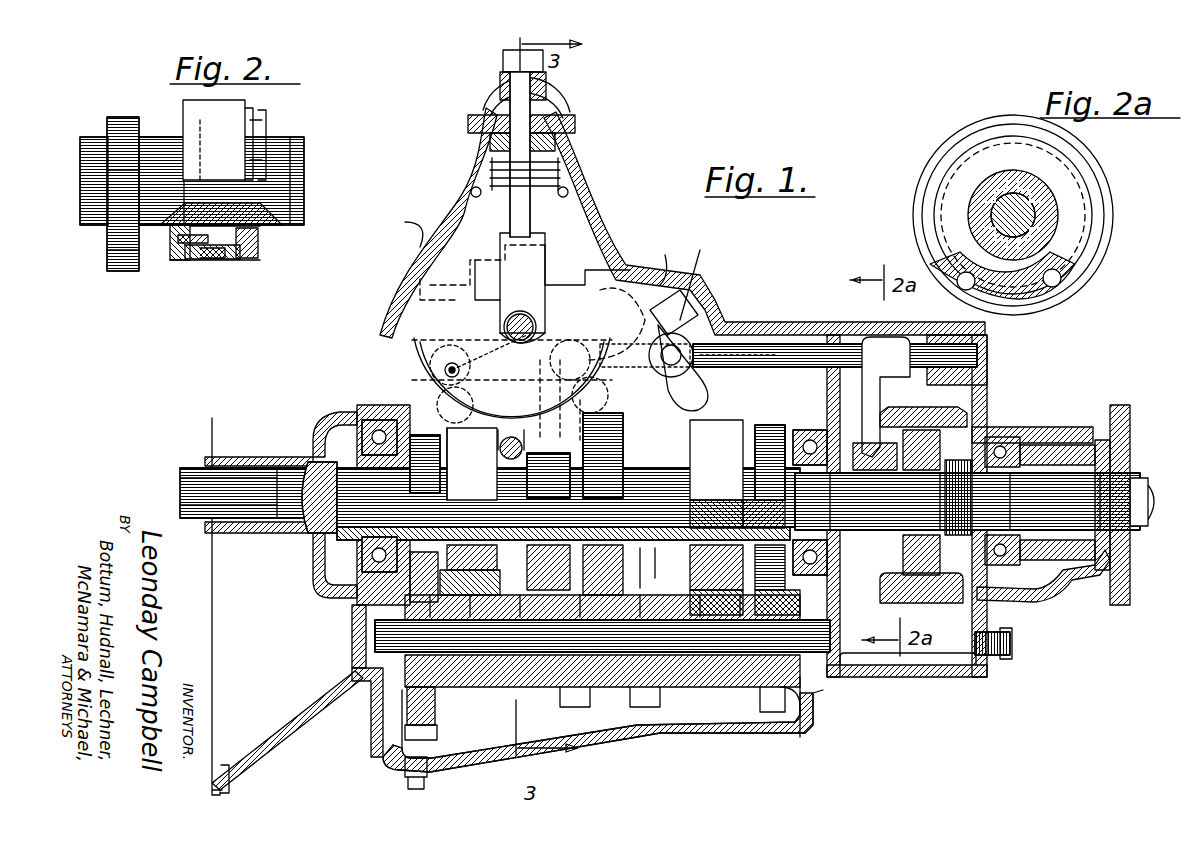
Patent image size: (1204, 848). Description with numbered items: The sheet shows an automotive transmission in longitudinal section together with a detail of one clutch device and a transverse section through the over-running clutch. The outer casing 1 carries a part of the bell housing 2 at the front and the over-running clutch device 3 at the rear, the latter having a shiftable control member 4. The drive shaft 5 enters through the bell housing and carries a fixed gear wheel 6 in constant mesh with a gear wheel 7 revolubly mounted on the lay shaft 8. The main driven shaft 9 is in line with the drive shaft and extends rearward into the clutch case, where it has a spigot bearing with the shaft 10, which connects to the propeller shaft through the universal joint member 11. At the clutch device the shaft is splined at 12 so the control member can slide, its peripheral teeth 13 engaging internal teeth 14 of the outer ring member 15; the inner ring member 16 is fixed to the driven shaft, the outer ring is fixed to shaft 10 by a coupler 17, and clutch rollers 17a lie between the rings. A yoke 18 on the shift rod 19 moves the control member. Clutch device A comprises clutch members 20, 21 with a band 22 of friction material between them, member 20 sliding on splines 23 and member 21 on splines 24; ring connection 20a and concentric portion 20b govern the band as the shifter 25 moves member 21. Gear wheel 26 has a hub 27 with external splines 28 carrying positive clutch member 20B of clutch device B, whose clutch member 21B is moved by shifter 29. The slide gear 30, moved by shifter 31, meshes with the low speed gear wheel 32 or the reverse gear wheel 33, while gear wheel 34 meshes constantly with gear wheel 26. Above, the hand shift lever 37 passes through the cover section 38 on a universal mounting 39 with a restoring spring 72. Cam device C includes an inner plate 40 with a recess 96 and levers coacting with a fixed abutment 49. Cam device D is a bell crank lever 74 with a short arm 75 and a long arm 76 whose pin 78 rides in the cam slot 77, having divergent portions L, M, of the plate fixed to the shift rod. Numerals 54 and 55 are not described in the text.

In FIG. 1, the outer casing 1 is at (657, 730).
In FIG. 1, the bell housing 2 is at (280, 700).
In FIG. 1, the over-running clutch device 3 is at (891, 680).
In FIG. 2A, the control member 4 is at (960, 212).
In FIG. 1, the control member 4 is at (864, 457).
In FIG. 2, the drive shaft 5 is at (95, 200).
In FIG. 1, the drive shaft 5 is at (225, 485).
In FIG. 2, the gear wheel 6 is at (122, 125).
In FIG. 1, the gear wheel 6 is at (427, 437).
In FIG. 2, the gear wheel 7 is at (124, 247).
In FIG. 1, the gear wheel 7 is at (432, 690).
In FIG. 1, the lay shaft 8 is at (612, 650).
In FIG. 2, the main driven shaft 9 is at (305, 183).
In FIG. 1, the main driven shaft 9 is at (570, 555).
In FIG. 1, the shaft 10 is at (1137, 496).
In FIG. 1, the universal joint member 11 is at (1120, 437).
In FIG. 2A, the splines 12 is at (1010, 193).
In FIG. 1, the splines 12 is at (875, 578).
In FIG. 2A, the peripheral teeth 13 is at (1058, 202).
In FIG. 1, the peripheral teeth 13 is at (930, 375).
In FIG. 2A, the internal teeth 14 is at (970, 150).
In FIG. 2A, the outer ring member 15 is at (1098, 190).
In FIG. 1, the outer ring member 15 is at (982, 425).
In FIG. 2A, the inner ring member 16 is at (1098, 270).
In FIG. 1, the inner ring member 16 is at (1000, 590).
In FIG. 1, the coupler 17 is at (985, 445).
In FIG. 2A, the clutch rollers 17a is at (1052, 275).
In FIG. 1, the clutch rollers 17a is at (930, 585).
In FIG. 1, the yoke or shifter element 18 is at (882, 385).
In FIG. 1, the shift rod 19 is at (920, 350).
In FIG. 2, the clutch member 20 is at (175, 255).
In FIG. 1, the clutch member 20 is at (478, 567).
In FIG. 2, the ring connection 20a is at (213, 215).
In FIG. 1, the ring connection 20a is at (450, 568).
In FIG. 2, the concentric portion 20b is at (220, 255).
In FIG. 1, the positive clutch member 20B is at (735, 595).
In FIG. 2, the clutch member 21 is at (260, 232).
In FIG. 1, the clutch member 21 is at (500, 580).
In FIG. 1, the clutch member 21B is at (695, 595).
In FIG. 2, the band of friction material 22 is at (235, 253).
In FIG. 1, the band of friction material 22 is at (475, 580).
In FIG. 2, the splines 23 is at (158, 133).
In FIG. 1, the splines 23 is at (450, 547).
In FIG. 2, the splines 24 is at (275, 145).
In FIG. 1, the splines 24 is at (630, 465).
In FIG. 1, the shifter 25 is at (486, 356).
In FIG. 1, the gear wheel 26 is at (763, 425).
In FIG. 1, the hub 27 is at (764, 514).
In FIG. 1, the external splines 28 is at (716, 514).
In FIG. 1, the shifter 29 is at (692, 380).
In FIG. 1, the slide gear 30 is at (652, 568).
In FIG. 1, the shifter 31 is at (598, 400).
In FIG. 1, the gear wheel 32 is at (580, 705).
In FIG. 1, the gear wheel 33 is at (675, 696).
In FIG. 1, the gear wheel 34 is at (797, 695).
In FIG. 1, the hand shift lever 37 is at (540, 210).
In FIG. 1, the cover section 38 is at (395, 279).
In FIG. 1, the universal mounting 39 is at (565, 97).
In FIG. 1, the inner plate 40 is at (534, 335).
In FIG. 1, the fixed abutment 49 is at (512, 435).
In FIG. 1, the cam plate 54 is at (595, 323).
In FIG. 1, the cam disc 55 is at (435, 332).
In FIG. 1, the spring 72 is at (560, 172).
In FIG. 1, the bell crank lever 74 is at (471, 192).
In FIG. 1, the short arm 75 is at (570, 240).
In FIG. 1, the long arm 76 is at (525, 271).
In FIG. 1, the cam slot 77 is at (675, 350).
In FIG. 1, the pin 78 is at (690, 310).
In FIG. 1, the recess 96 is at (358, 390).
In FIG. 2, the clutch device A is at (214, 140).
In FIG. 1, the clutch device A is at (472, 464).
In FIG. 1, the clutch device B is at (716, 505).
In FIG. 1, the cam device C is at (406, 228).
In FIG. 1, the cam device D is at (659, 258).
In FIG. 1, the divergent portion of cam slot L is at (690, 273).
In FIG. 1, the divergent portion of cam slot M is at (706, 433).